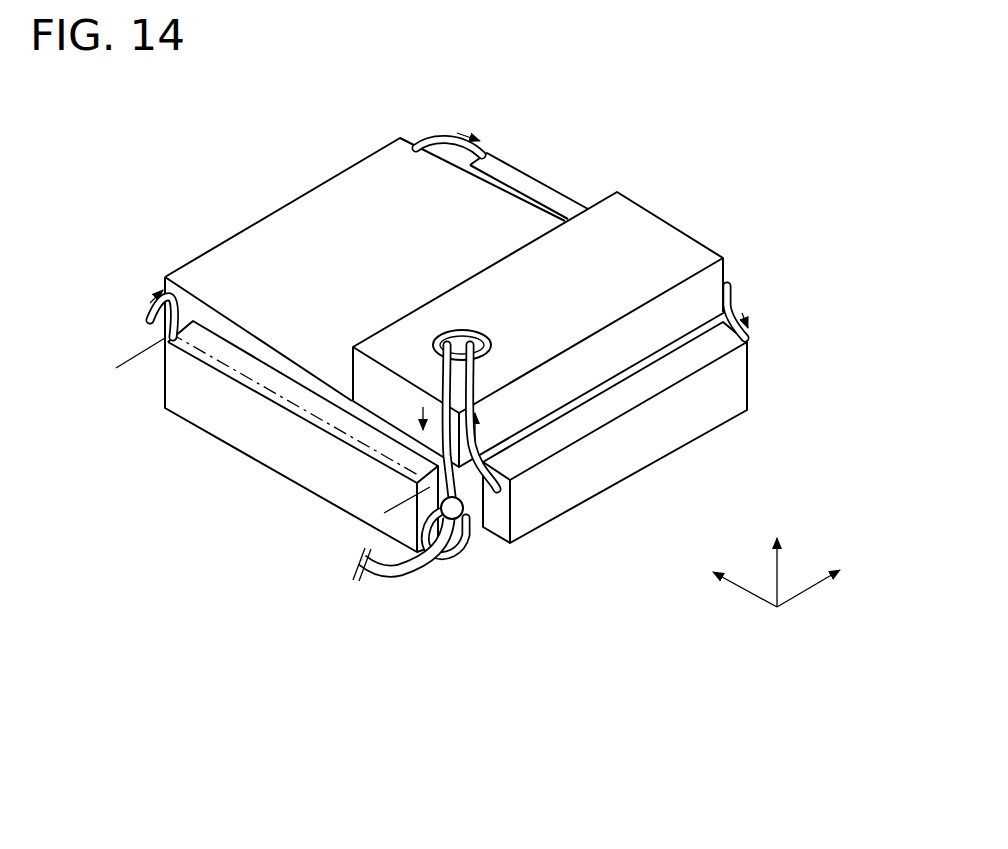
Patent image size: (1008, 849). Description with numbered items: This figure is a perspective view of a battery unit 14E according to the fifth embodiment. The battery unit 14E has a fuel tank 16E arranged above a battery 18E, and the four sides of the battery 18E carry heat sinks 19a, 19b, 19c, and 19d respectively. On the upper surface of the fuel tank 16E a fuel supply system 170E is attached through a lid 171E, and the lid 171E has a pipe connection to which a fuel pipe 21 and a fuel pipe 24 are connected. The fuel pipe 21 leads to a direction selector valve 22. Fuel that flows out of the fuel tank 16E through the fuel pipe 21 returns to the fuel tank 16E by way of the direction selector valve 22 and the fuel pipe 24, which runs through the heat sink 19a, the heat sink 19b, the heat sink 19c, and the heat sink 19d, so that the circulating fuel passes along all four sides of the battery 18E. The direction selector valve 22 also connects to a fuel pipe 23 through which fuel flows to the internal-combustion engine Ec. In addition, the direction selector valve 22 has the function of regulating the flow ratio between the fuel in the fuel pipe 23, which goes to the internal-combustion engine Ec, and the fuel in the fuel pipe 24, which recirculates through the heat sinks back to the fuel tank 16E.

The battery unit 14E is at (737, 162).
The fuel tank 16E is at (712, 238).
The battery 18E is at (523, 190).
The heat sink 19a is at (253, 458).
The heat sink 19b is at (280, 202).
The heat sink 19c is at (515, 158).
The heat sink 19d is at (662, 462).
The fuel supply system 170E is at (480, 333).
The lid 171E is at (492, 345).
The fuel pipe 21 is at (490, 533).
The direction selector valve 22 is at (462, 522).
The fuel pipe 23 is at (382, 575).
The fuel pipe 24 is at (437, 140).
The internal-combustion engine Ec is at (357, 562).